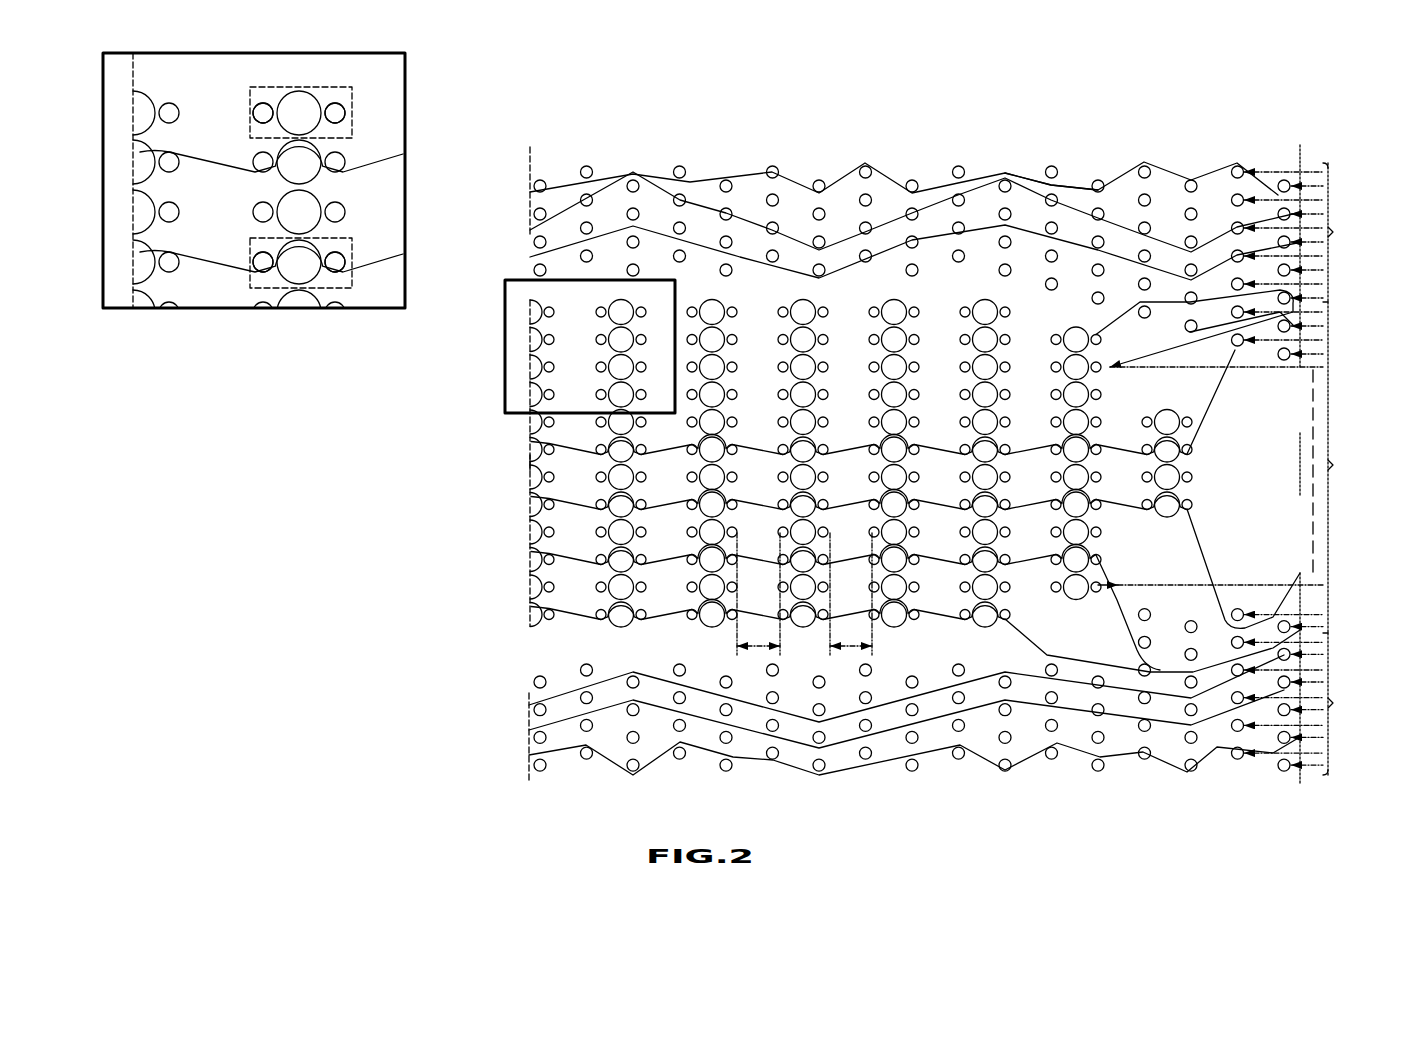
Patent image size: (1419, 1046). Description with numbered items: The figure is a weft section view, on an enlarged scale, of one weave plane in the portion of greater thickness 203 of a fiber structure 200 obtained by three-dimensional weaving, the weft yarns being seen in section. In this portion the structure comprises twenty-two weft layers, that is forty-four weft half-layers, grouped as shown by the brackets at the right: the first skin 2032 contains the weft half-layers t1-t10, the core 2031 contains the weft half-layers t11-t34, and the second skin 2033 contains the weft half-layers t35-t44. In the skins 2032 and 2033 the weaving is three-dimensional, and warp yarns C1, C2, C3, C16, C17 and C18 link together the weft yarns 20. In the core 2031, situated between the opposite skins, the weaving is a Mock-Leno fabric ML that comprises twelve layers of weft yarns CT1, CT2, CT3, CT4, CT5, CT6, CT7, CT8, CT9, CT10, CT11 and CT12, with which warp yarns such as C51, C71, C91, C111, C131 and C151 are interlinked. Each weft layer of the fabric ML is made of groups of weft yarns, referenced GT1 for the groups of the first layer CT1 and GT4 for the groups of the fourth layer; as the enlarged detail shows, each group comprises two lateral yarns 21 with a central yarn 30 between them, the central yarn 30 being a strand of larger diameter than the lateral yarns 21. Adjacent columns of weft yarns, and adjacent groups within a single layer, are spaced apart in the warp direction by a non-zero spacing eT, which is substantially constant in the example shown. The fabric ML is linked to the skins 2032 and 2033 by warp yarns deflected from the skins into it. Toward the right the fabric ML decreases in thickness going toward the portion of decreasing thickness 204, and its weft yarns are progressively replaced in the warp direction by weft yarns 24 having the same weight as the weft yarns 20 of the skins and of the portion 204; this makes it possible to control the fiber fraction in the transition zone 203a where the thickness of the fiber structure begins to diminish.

The fiber structure 200 is at (490, 122).
The portion of greater thickness 203 is at (508, 248).
The transition zone 203a is at (1056, 162).
The core 2031 is at (637, 568).
The first skin 2032 is at (906, 205).
The second skin 2033 is at (892, 748).
The portion of decreasing thickness 204 is at (1366, 563).
The weft yarns 20 is at (819, 186).
The lateral yarns 21 is at (261, 104).
The weft yarns 24 is at (1191, 332).
The central yarn 30 is at (299, 107).
The groups of weft yarns of the first layer GT1 is at (353, 120).
The groups of weft yarns of the fourth layer GT4 is at (353, 252).
The warp yarn C1 is at (650, 172).
The warp yarn C2 is at (736, 222).
The warp yarn C3 is at (574, 247).
The warp yarn C51 is at (209, 157).
The warp yarn C71 is at (209, 258).
The warp yarn C91 is at (574, 449).
The warp yarn C111 is at (575, 502).
The warp yarn C131 is at (575, 557).
The warp yarn C151 is at (575, 612).
The warp yarn C16 is at (568, 692).
The warp yarn C17 is at (608, 708).
The warp yarn C18 is at (750, 758).
The first layer of weft yarns CT1 is at (128, 113).
The layer of weft yarns CT2 is at (128, 162).
The layer of weft yarns CT3 is at (128, 212).
The layer of weft yarns CT4 is at (128, 262).
The layer of weft yarns CT5 is at (523, 422).
The layer of weft yarns CT6 is at (523, 450).
The layer of weft yarns CT7 is at (523, 477).
The layer of weft yarns CT8 is at (523, 504).
The layer of weft yarns CT9 is at (523, 532).
The layer of weft yarns CT10 is at (523, 560).
The layer of weft yarns CT11 is at (523, 587).
The layer of weft yarns CT12 is at (523, 614).
The Mock-Leno fabric ML is at (524, 630).
The spacing eT is at (804, 594).
The weft half-layers t1 to t10 t1-t10 is at (1371, 232).
The weft half-layers t11 to t34 t11-t34 is at (1371, 467).
The weft half-layers t35 to t44 t35-t44 is at (1371, 704).